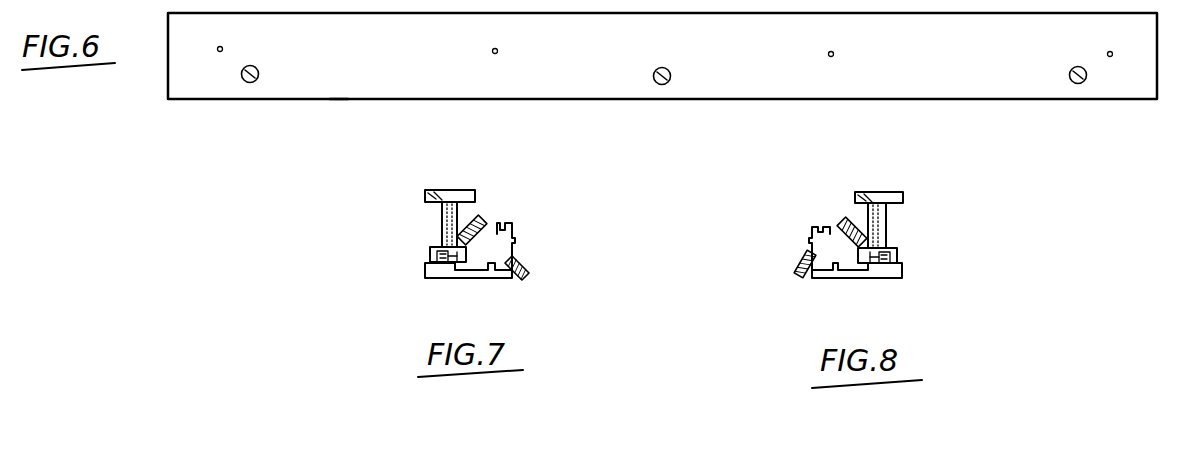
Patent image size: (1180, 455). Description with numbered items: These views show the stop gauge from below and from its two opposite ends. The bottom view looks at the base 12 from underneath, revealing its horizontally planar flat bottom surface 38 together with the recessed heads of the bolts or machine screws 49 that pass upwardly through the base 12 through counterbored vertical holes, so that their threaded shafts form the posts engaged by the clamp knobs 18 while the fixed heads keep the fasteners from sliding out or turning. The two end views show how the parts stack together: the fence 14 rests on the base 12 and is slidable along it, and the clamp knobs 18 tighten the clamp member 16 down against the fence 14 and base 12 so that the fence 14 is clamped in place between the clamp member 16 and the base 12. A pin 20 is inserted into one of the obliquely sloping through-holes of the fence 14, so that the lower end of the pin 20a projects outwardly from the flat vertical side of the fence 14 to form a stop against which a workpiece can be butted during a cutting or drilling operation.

In FIG. 6, the base 12 is at (195, 103).
In FIG. 7, the base 12 is at (432, 284).
In FIG. 8, the base 12 is at (889, 282).
In FIG. 7, the fence 14 is at (516, 233).
In FIG. 8, the fence 14 is at (813, 227).
In FIG. 7, the clamp member 16 is at (428, 249).
In FIG. 8, the clamp member 16 is at (900, 251).
In FIG. 7, the clamp knobs 18 is at (424, 192).
In FIG. 8, the clamp knobs 18 is at (906, 193).
In FIG. 7, the pin 20 is at (480, 214).
In FIG. 8, the pin 20 is at (843, 222).
In FIG. 7, the lower end of the pin 20a is at (526, 270).
In FIG. 8, the lower end of the pin 20a is at (800, 274).
In FIG. 6, the flat bottom surface 38 is at (336, 82).
In FIG. 6, the machine screws 49 is at (257, 80).